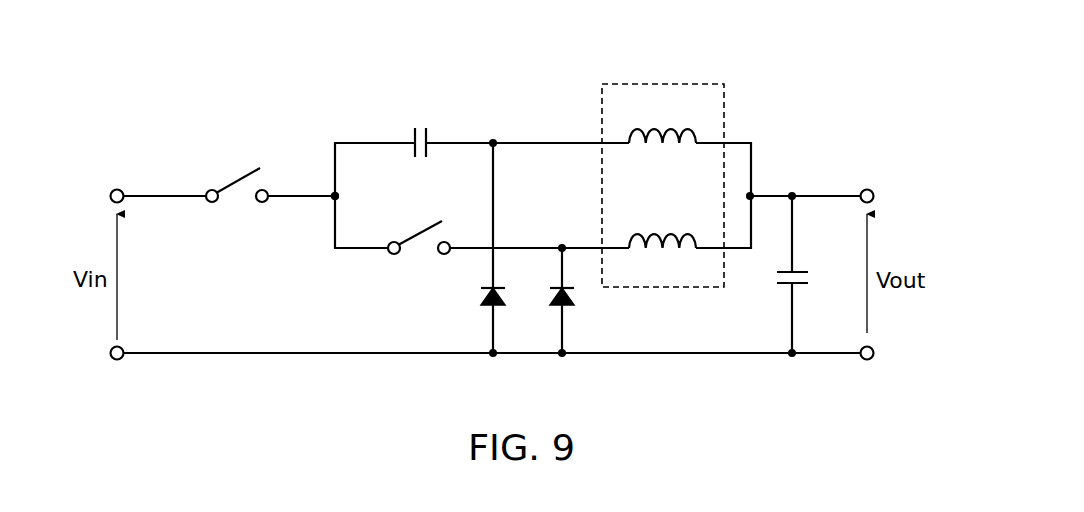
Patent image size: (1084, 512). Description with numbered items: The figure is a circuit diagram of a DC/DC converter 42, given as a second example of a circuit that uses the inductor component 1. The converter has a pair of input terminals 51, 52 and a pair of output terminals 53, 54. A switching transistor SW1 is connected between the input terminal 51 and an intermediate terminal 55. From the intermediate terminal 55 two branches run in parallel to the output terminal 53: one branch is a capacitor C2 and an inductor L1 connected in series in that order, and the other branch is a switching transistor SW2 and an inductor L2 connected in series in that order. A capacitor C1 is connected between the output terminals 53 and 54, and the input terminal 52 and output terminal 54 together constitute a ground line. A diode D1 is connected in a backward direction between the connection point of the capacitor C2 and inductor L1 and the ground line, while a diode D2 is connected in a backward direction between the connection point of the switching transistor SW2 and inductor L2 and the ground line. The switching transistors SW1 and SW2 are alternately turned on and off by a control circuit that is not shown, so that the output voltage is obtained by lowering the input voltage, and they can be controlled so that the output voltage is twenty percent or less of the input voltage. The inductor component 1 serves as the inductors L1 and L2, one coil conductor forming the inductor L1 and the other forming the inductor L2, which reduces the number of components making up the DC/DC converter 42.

The inductor component 1 is at (687, 82).
The DC/DC converter 42 is at (852, 49).
The input terminal 51 is at (110, 193).
The input terminal 52 is at (110, 348).
The output terminal 53 is at (874, 193).
The output terminal 54 is at (874, 350).
The intermediate terminal 55 is at (333, 193).
The switching transistor SW1 is at (236, 182).
The switching transistor SW2 is at (418, 232).
The capacitor C1 is at (800, 272).
The capacitor C2 is at (413, 135).
The inductor L1 is at (667, 128).
The inductor L2 is at (667, 235).
The diode D1 is at (483, 290).
The diode D2 is at (573, 293).